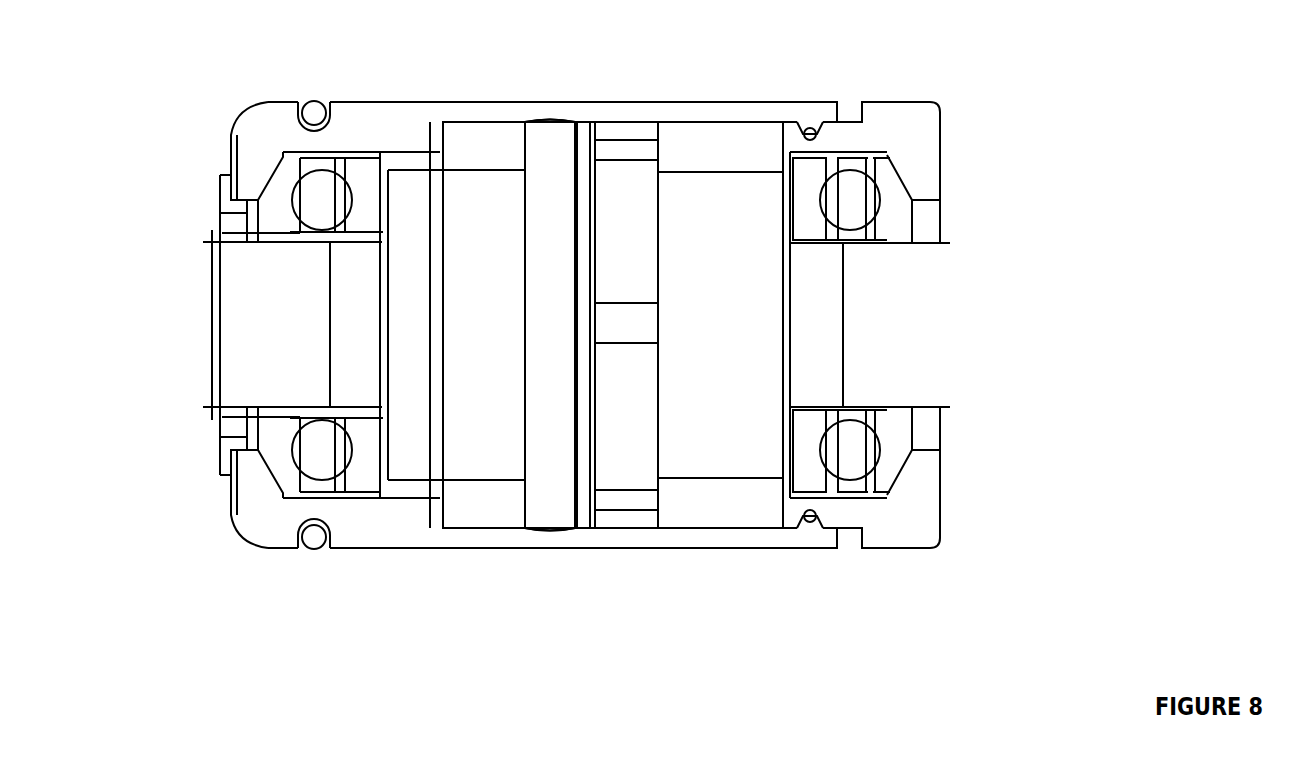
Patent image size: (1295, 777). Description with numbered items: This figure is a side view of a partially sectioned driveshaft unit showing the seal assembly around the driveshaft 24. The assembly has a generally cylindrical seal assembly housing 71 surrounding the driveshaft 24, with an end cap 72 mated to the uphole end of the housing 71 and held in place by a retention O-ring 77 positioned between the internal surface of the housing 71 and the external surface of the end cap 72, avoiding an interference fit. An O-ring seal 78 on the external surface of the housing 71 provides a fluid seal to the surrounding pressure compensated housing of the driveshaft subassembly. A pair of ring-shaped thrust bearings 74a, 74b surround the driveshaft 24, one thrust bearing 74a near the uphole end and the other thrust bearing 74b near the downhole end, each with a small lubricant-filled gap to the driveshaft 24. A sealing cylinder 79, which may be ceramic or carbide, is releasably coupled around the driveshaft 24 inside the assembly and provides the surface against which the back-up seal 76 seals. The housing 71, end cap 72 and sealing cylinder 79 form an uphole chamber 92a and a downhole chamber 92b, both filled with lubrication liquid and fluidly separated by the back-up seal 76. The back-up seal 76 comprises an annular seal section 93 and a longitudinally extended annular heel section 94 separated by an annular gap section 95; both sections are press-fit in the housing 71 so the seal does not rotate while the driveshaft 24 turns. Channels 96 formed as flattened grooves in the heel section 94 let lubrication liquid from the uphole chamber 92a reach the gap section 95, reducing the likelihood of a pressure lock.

The driveshaft 24 is at (250, 343).
The seal assembly housing 71 is at (628, 112).
The end cap 72 is at (917, 122).
The thrust bearing 74a is at (895, 197).
The thrust bearing 74b is at (365, 177).
The back-up seal 76 is at (552, 122).
The retention O-ring 77 is at (808, 532).
The O-ring seal 78 is at (316, 100).
The sealing cylinder 79 is at (702, 193).
The uphole chamber 92a is at (713, 510).
The downhole chamber 92b is at (458, 518).
The seal section 93 is at (538, 520).
The heel section 94 is at (643, 475).
The gap section 95 is at (583, 518).
The channels 96 is at (640, 323).